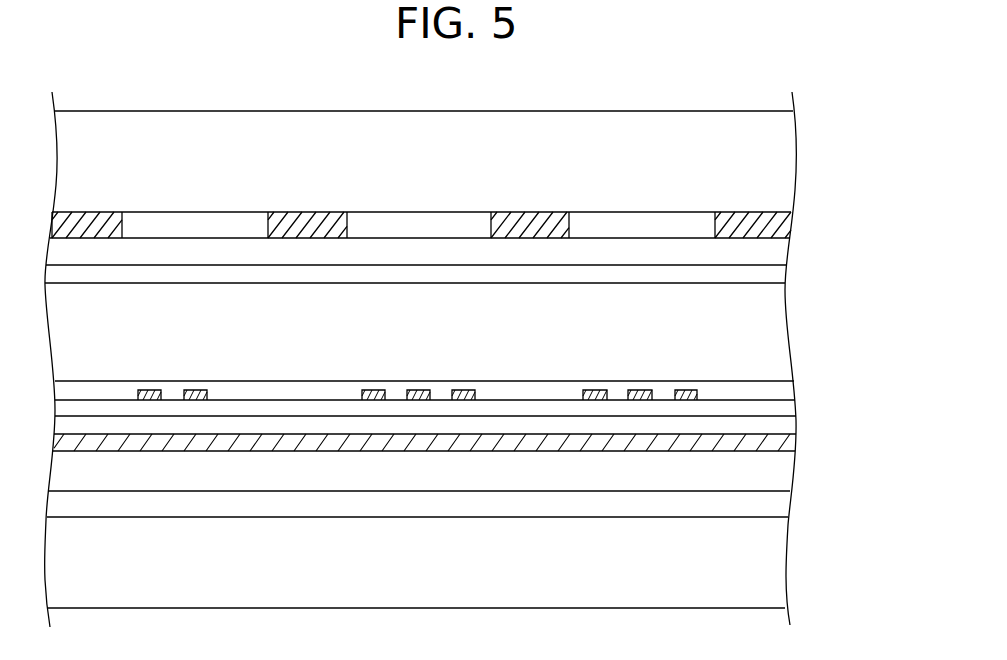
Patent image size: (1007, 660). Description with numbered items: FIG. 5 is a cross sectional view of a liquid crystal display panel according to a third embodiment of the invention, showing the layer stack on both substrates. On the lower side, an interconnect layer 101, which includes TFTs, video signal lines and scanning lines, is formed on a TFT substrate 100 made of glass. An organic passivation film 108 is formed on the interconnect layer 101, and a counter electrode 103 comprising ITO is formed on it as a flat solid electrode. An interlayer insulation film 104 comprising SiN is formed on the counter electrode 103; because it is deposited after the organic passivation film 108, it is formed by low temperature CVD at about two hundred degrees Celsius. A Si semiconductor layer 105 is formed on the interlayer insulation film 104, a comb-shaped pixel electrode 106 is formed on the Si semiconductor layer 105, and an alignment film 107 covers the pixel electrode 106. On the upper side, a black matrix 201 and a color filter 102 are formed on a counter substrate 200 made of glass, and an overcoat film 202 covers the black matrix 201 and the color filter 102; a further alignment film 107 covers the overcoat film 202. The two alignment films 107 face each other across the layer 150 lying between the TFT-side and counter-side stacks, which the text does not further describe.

The TFT substrate 100 is at (773, 583).
The interconnect layer 101 is at (782, 507).
The color filter 102 is at (670, 220).
The counter electrode 103 is at (795, 452).
The interlayer insulation film 104 is at (787, 426).
The Si semiconductor layer 105 is at (787, 402).
The pixel electrode 106 is at (688, 393).
The alignment film 107 is at (773, 273).
The organic passivation film 108 is at (783, 478).
The liquid crystal layer 150 is at (770, 312).
The counter substrate 200 is at (780, 163).
The black matrix 201 is at (530, 212).
The overcoat film 202 is at (775, 248).